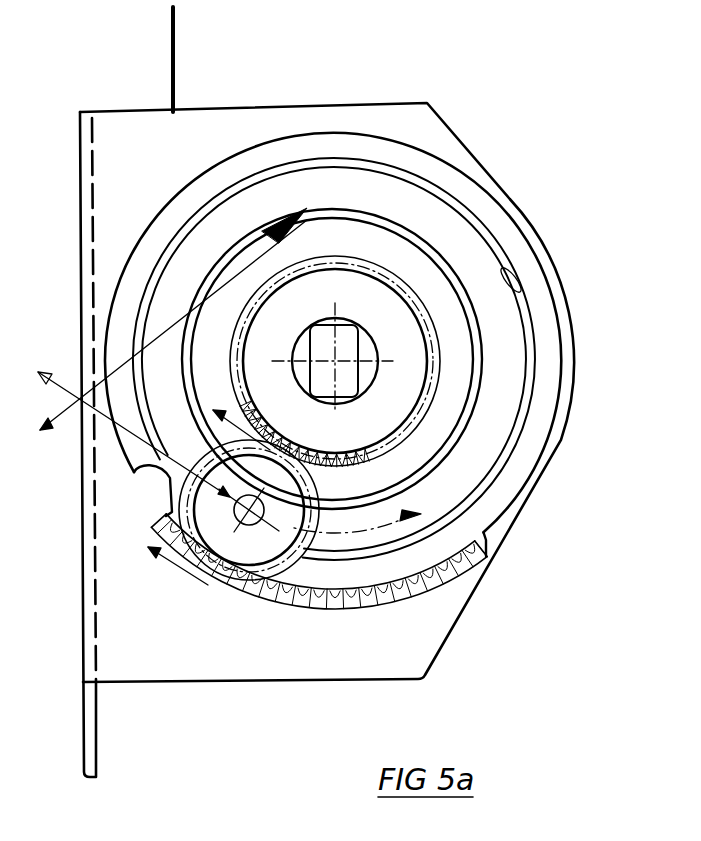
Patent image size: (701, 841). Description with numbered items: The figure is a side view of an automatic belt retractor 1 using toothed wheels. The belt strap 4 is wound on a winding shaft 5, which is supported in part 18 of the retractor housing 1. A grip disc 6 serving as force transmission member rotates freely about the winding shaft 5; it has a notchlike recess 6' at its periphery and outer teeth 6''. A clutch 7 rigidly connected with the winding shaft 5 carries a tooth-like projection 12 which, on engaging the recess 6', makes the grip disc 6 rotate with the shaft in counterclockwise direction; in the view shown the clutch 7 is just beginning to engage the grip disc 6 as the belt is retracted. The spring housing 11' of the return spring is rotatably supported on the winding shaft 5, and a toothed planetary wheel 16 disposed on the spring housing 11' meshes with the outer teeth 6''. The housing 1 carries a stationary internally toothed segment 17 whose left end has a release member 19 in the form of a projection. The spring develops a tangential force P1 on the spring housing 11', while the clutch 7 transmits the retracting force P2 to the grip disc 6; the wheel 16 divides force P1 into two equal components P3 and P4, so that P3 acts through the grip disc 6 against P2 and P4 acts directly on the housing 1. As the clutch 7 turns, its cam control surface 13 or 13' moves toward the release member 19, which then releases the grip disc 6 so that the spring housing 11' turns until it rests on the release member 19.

The automatic belt retractor 1 is at (430, 104).
The belt strap 4 is at (175, 64).
The winding shaft 5 is at (348, 347).
The grip disc 6 is at (363, 329).
The notchlike recess 6' is at (332, 281).
The outer teeth 6'' is at (408, 333).
The clutch 7 is at (510, 373).
The spring housing 11' is at (334, 402).
The tooth-like projection 12 is at (281, 217).
The cam control surface 13 is at (382, 359).
The cam control surface 13' is at (511, 280).
The toothed planetary wheel 16 is at (258, 548).
The internally toothed segment 17 is at (390, 600).
The housing part 18 is at (353, 604).
The release member 19 is at (153, 487).
The spring housing force P1 is at (128, 420).
The retracting force P2 is at (170, 341).
The force component P3 is at (235, 415).
The force component P4 is at (172, 566).